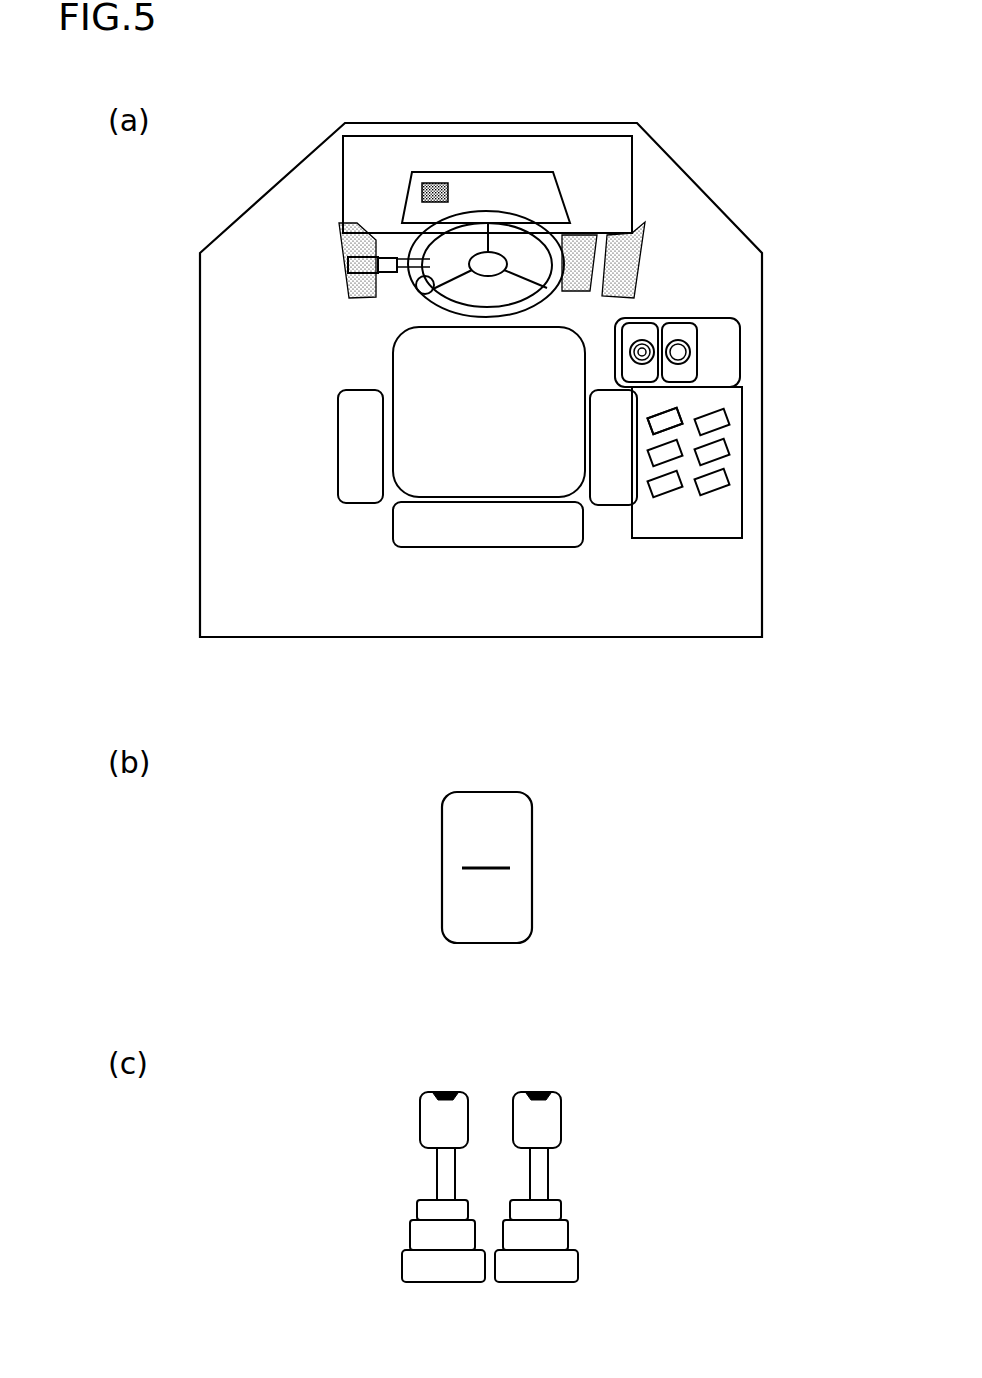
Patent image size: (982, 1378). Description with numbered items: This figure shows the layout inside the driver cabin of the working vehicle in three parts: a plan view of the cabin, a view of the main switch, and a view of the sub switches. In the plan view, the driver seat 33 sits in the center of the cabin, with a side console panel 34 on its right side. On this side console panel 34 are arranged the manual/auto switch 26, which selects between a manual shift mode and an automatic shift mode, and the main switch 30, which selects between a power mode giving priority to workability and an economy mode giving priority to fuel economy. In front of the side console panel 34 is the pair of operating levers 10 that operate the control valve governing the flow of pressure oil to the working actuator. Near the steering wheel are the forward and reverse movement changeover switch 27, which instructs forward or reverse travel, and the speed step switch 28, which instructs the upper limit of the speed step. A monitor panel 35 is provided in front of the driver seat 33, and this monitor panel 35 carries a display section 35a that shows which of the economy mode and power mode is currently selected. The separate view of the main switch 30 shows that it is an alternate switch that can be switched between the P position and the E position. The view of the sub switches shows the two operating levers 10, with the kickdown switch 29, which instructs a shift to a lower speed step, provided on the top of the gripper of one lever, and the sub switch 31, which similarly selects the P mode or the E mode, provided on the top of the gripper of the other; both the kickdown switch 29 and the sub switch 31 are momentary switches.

The operating lever 10 is at (656, 316).
The manual/auto switch 26 is at (728, 420).
The forward and reverse movement changeover switch 27 is at (395, 273).
The speed step switch 28 is at (353, 273).
The kickdown switch 29 is at (690, 345).
The main switch 30 is at (680, 412).
The sub switch 31 is at (652, 347).
The driver seat 33 is at (410, 478).
The side console panel 34 is at (742, 467).
The monitor panel 35 is at (492, 170).
The display section 35a is at (427, 182).